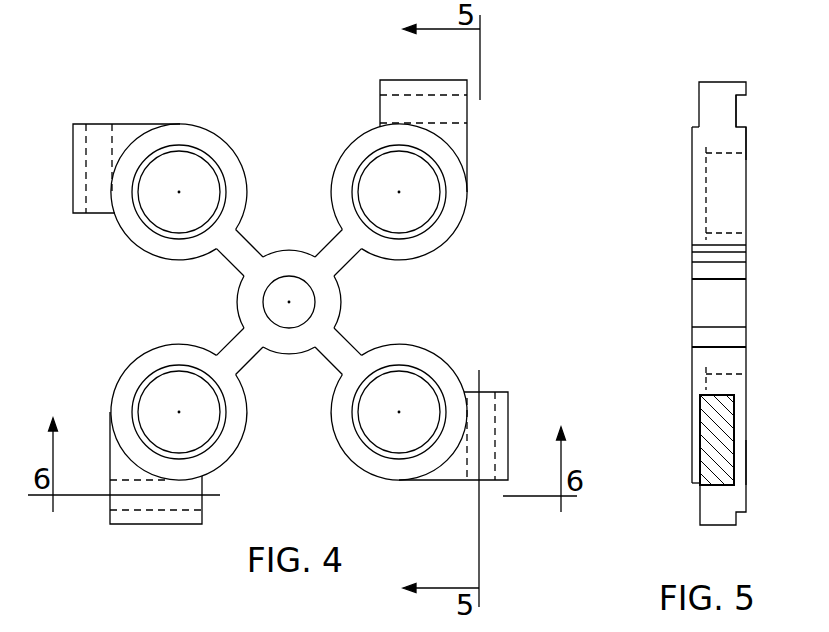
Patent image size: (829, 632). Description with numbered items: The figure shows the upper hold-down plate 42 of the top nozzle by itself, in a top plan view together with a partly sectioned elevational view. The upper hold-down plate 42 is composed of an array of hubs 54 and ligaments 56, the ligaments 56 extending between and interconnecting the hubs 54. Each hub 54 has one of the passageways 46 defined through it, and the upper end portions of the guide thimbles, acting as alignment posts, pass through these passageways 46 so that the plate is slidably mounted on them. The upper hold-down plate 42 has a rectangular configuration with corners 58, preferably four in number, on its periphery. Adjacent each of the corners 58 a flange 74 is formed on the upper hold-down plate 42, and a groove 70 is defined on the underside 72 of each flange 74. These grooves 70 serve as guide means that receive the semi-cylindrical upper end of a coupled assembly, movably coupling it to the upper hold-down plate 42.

In FIG. 4, the upper hold-down plate 42 is at (307, 307).
In FIG. 5, the upper hold-down plate 42 is at (712, 289).
In FIG. 4, the passageways 46 is at (197, 157).
In FIG. 4, the hubs 54 is at (156, 243).
In FIG. 5, the hubs 54 is at (692, 226).
In FIG. 4, the ligaments 56 is at (235, 262).
In FIG. 5, the ligaments 56 is at (692, 342).
In FIG. 4, the corners 58 is at (125, 143).
In FIG. 5, the corners 58 is at (699, 113).
In FIG. 4, the groove 70 is at (86, 183).
In FIG. 5, the groove 70 is at (740, 110).
In FIG. 5, the underside 72 is at (747, 140).
In FIG. 4, the flange 74 is at (83, 124).
In FIG. 5, the flange 74 is at (722, 82).